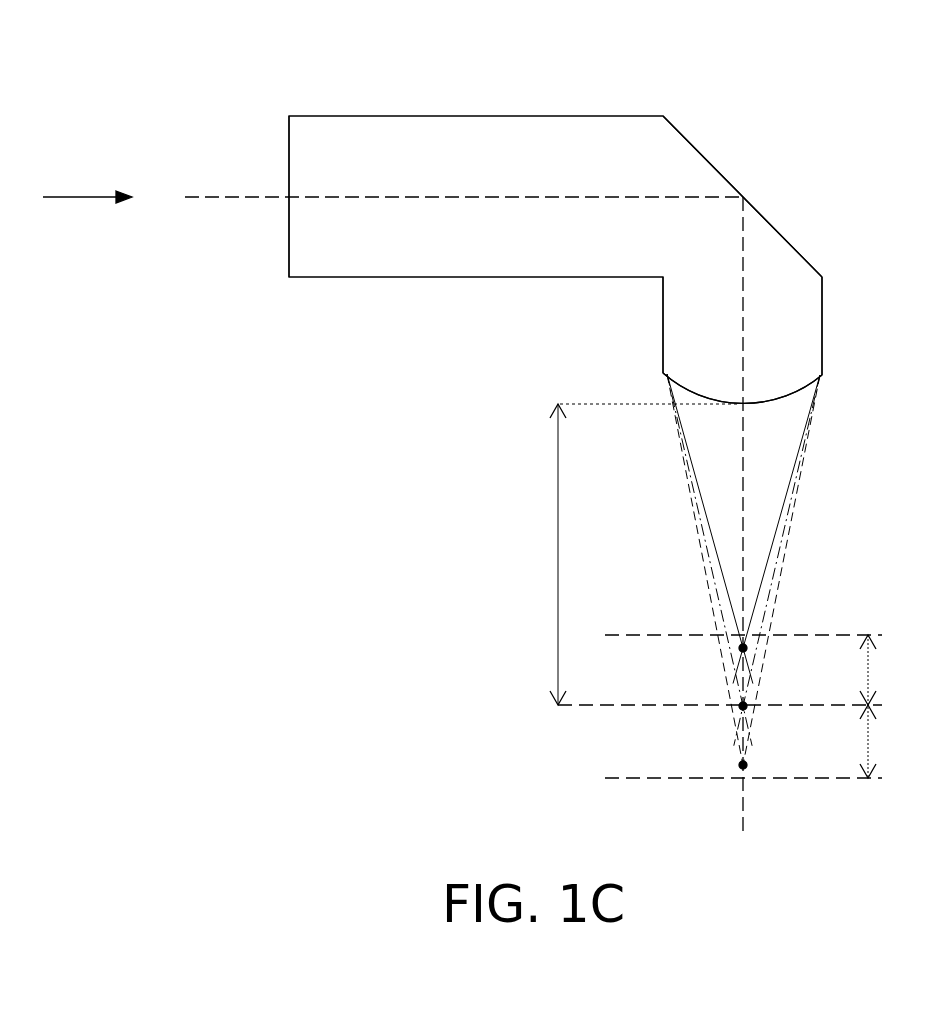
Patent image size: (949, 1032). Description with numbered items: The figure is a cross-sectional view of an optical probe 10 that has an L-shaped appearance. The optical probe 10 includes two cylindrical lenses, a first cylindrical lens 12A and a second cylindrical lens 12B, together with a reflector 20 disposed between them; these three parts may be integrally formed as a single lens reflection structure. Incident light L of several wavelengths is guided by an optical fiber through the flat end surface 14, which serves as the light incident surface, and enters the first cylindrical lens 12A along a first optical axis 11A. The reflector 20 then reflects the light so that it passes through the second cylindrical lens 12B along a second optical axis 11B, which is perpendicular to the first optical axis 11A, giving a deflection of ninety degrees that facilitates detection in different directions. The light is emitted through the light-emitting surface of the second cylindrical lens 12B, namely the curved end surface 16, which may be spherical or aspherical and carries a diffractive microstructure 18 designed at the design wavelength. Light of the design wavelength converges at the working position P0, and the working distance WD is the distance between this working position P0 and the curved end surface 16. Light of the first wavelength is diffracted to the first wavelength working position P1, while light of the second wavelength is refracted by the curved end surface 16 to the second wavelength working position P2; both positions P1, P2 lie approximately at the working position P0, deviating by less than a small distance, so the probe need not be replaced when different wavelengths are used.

The optical probe 10 is at (97, 52).
The first cylindrical lens 12A is at (485, 115).
The second cylindrical lens 12B is at (662, 343).
The flat end surface 14 is at (287, 158).
The first optical axis 11A is at (250, 200).
The second optical axis 11B is at (748, 345).
The reflector 20 is at (783, 232).
The curved end surface 16 is at (786, 391).
The diffractive microstructure 18 is at (770, 403).
The incident light L is at (87, 217).
The working distance WD is at (624, 554).
The working position P0 is at (738, 712).
The first wavelength working position P1 is at (738, 652).
The second wavelength working position P2 is at (740, 770).